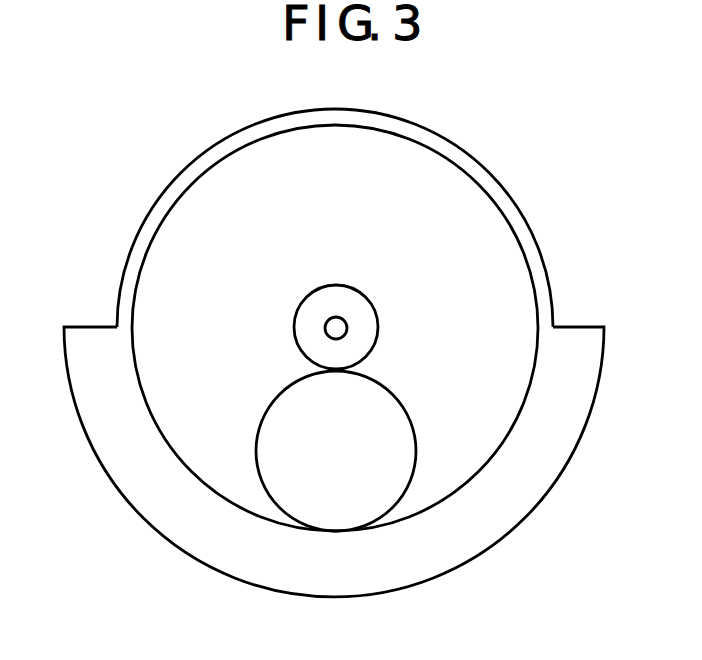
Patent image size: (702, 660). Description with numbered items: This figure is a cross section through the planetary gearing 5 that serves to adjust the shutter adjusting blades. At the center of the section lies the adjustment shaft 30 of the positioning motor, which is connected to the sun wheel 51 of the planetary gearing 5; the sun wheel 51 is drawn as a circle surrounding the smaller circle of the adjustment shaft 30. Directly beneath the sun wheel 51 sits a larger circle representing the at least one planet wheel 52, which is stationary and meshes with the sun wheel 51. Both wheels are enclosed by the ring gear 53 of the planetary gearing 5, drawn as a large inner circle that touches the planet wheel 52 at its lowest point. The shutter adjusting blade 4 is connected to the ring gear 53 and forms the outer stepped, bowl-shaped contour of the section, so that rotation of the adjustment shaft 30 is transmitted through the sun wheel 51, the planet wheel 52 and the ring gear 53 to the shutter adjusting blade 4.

The planetary gearing 5 is at (513, 139).
The shutter adjusting blade 4 is at (140, 499).
The ring gear 53 is at (142, 388).
The sun wheel 51 is at (356, 308).
The adjustment shaft 30 is at (325, 329).
The planet wheel 52 is at (390, 420).